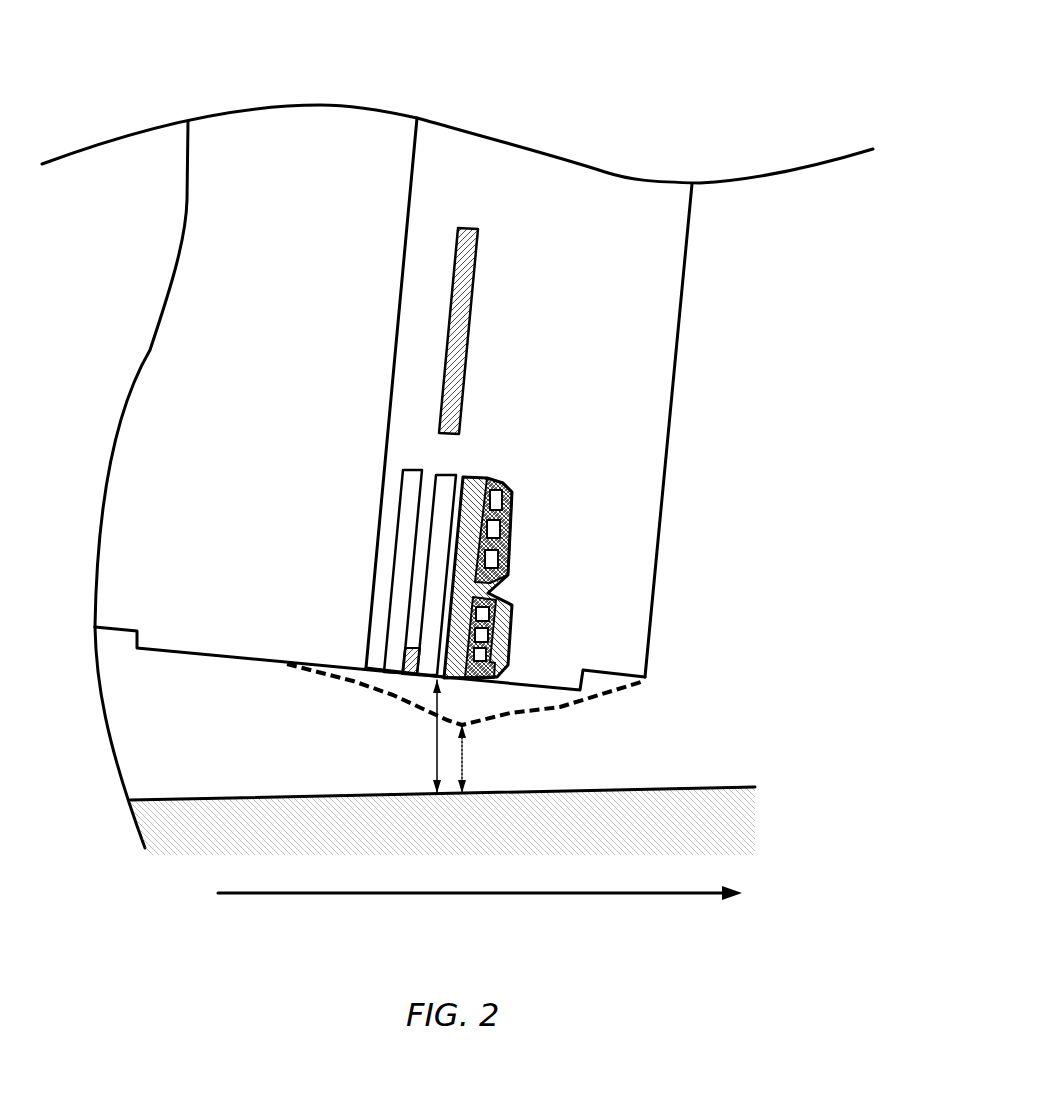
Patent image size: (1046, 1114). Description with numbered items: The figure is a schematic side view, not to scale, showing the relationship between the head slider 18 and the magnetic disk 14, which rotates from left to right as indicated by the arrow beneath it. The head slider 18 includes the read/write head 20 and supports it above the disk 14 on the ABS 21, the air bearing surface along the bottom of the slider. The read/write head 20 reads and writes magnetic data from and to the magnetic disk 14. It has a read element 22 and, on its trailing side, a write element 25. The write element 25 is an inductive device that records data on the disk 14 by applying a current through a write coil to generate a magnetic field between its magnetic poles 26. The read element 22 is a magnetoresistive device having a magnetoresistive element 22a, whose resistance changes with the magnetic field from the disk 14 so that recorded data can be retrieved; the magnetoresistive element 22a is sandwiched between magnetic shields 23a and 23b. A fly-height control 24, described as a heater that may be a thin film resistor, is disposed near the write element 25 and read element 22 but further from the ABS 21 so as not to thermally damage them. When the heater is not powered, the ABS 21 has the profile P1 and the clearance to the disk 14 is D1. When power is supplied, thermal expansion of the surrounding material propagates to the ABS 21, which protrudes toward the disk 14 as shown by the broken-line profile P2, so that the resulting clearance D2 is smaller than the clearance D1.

The magnetic disk 14 is at (693, 789).
The head slider 18 is at (568, 70).
The read/write head 20 is at (440, 182).
The ABS 21 is at (170, 654).
The read element 22 is at (395, 680).
The magnetoresistive element 22a is at (405, 675).
The magnetic shield 23a is at (447, 475).
The magnetic shield 23b is at (384, 481).
The fly-height control 24 is at (473, 303).
The write element 25 is at (520, 590).
The magnetic poles 26 is at (456, 686).
The profile P1 is at (350, 670).
The protrusion profile P2 is at (565, 707).
The clearance D1 is at (424, 736).
The clearance D2 is at (478, 759).